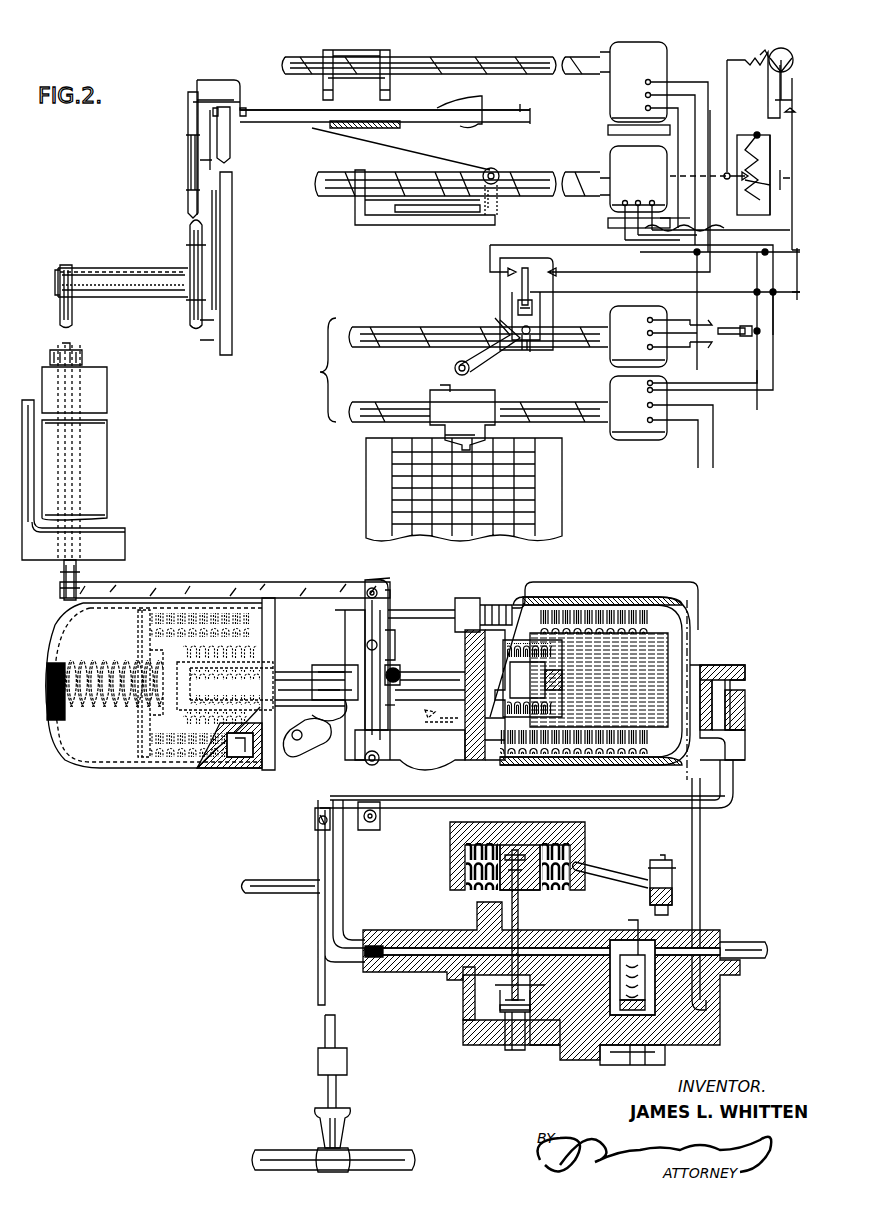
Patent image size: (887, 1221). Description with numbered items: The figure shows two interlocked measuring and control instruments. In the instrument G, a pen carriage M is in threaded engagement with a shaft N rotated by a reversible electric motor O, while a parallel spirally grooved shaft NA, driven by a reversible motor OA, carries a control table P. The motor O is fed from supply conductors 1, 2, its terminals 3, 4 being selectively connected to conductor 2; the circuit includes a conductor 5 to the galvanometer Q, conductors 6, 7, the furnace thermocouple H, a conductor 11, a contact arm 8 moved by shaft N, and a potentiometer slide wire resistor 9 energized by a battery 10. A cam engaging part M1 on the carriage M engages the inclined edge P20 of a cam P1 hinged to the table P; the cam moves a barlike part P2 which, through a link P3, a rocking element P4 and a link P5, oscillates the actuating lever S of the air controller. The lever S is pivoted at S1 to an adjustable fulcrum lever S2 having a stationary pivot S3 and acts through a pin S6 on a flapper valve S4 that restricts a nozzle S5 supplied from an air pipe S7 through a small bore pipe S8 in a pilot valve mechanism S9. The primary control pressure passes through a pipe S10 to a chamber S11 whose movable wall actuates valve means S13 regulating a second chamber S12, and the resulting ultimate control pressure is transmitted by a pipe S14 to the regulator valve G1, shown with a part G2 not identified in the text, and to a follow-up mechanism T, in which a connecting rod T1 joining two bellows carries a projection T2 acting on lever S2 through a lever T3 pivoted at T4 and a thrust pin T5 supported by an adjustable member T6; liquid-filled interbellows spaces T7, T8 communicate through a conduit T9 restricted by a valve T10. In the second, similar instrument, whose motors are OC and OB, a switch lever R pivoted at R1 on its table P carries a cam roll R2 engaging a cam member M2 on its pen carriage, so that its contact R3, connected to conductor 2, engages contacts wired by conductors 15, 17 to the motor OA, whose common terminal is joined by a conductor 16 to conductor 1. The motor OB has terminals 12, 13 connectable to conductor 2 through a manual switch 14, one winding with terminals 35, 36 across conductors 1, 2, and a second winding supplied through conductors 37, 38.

The instrument G is at (150, 150).
The control table P is at (320, 90).
The cam P1 is at (385, 122).
The barlike part P2 is at (285, 122).
The inclined edge P20 is at (330, 135).
The link P3 is at (190, 205).
The rocking element P4 is at (164, 283).
The link P5 is at (78, 562).
The spirally grooved shaft NA is at (526, 62).
The shaft N is at (332, 172).
The pen carriage M is at (365, 218).
The cam engaging part M1 is at (500, 170).
The cam member M2 is at (442, 388).
The switch lever R is at (485, 358).
The pivot R1 is at (532, 350).
The cam roll R2 is at (452, 368).
The switch contact R3 is at (522, 278).
The reversible electric motor OA is at (635, 88).
The reversible electric motor O is at (635, 193).
The motor OB is at (653, 336).
The motor OC is at (638, 408).
The supply conductor 1 is at (757, 252).
The supply conductor 2 is at (560, 292).
The motor terminal 3 is at (630, 235).
The motor terminal 4 is at (660, 218).
The conductor 5 is at (775, 278).
The conductor 6 is at (760, 55).
The conductor 7 is at (782, 74).
The slider or contact arm 8 is at (725, 175).
The potentiometer slide wire resistor 9 is at (745, 185).
The battery 10 is at (756, 138).
The conductor 11 is at (727, 80).
The motor terminal 12 is at (700, 316).
The motor terminal 13 is at (712, 355).
The manually operable switch member 14 is at (732, 330).
The conductor 15 is at (582, 268).
The conductor 16 is at (646, 96).
The conductor 17 is at (648, 110).
The winding terminal 35 is at (773, 350).
The winding terminal 36 is at (755, 370).
The conductor 37 is at (715, 440).
The conductor 38 is at (695, 453).
The furnace thermocouple H is at (735, 74).
The galvanometer Q is at (788, 50).
The flapper valve actuating element S is at (195, 592).
The pivot S1 is at (372, 590).
The adjustable fulcrum member S2 is at (358, 665).
The stationary fulcrum pivot S3 is at (378, 758).
The flapper valve S4 is at (385, 665).
The nozzle S5 is at (428, 612).
The pin S6 is at (368, 645).
The pipe S7 is at (748, 965).
The small bore pipe S8 is at (648, 975).
The pilot or booster valve mechanism S9 is at (480, 920).
The pipe S10 is at (615, 868).
The chamber S11 is at (575, 845).
The second pilot valve chamber S12 is at (470, 985).
The valve means S13 is at (490, 1020).
The pipe S14 is at (740, 790).
The mechanism T is at (200, 770).
The connecting rod T1 is at (285, 680).
The projection T2 is at (412, 672).
The lever T3 is at (385, 645).
The pivot T4 is at (365, 620).
The thrust pin T5 is at (385, 712).
The member T6 is at (375, 815).
The interbellows space T7 is at (655, 658).
The interbellows space T8 is at (150, 770).
The conduit T9 is at (448, 725).
The valve T10 is at (432, 715).
The valve G1 is at (350, 1142).
The handle bar G2 is at (280, 1155).